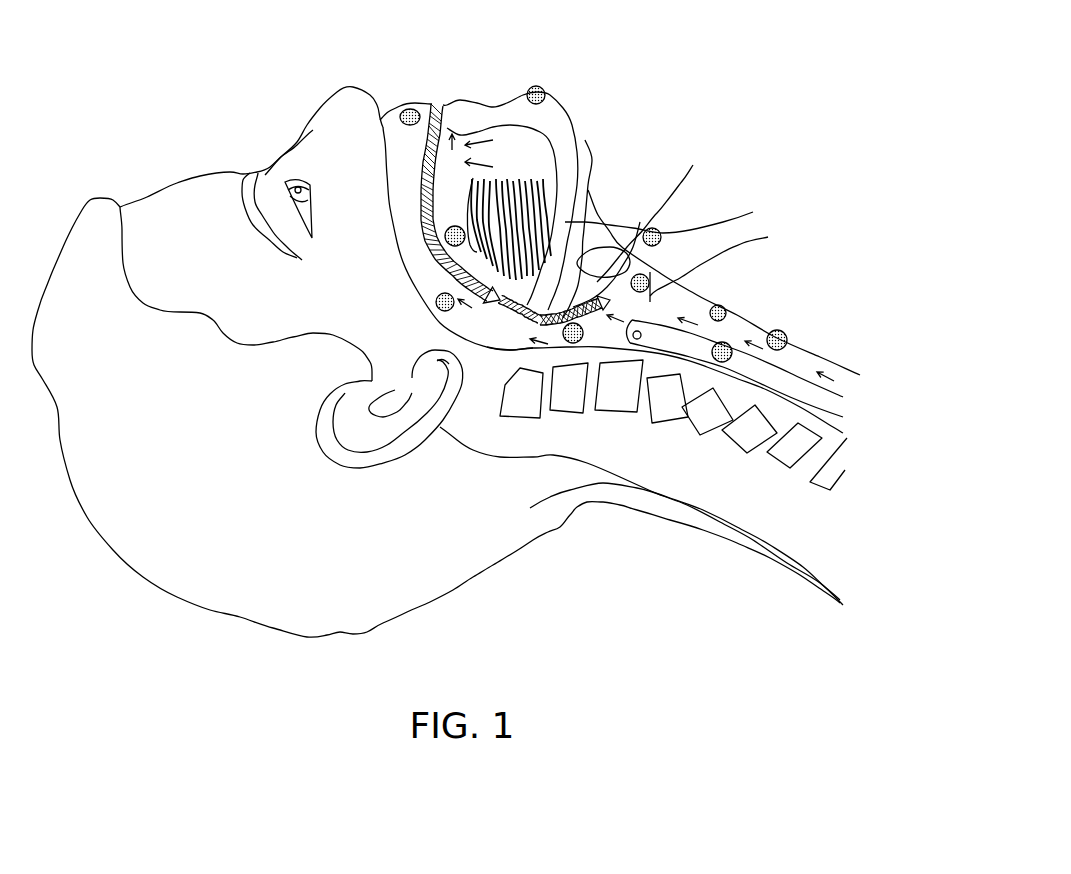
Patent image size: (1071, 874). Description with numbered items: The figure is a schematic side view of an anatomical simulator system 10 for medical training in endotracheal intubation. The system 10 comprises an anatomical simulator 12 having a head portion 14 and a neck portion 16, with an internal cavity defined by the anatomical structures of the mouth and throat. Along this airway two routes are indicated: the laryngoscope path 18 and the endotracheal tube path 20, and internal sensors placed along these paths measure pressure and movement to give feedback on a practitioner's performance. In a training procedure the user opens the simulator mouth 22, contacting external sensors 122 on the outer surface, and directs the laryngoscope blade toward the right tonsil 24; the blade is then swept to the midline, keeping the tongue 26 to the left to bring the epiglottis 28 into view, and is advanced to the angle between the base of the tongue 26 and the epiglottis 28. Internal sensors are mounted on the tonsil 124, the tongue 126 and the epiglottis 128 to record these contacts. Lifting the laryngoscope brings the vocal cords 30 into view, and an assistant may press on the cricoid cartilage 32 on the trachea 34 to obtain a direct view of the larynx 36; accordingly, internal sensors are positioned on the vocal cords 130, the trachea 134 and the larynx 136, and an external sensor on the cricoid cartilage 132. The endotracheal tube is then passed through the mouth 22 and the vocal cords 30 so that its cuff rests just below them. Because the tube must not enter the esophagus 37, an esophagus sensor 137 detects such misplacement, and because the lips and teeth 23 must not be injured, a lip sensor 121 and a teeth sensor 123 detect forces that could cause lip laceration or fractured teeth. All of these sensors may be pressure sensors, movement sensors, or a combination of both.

The anatomical simulator system 10 is at (146, 118).
The anatomical simulator 12 is at (173, 183).
The head portion 14 is at (227, 453).
The neck portion 16 is at (692, 469).
The laryngoscope path 18 is at (452, 102).
The endotracheal tube path 20 is at (540, 317).
The mouth 22 is at (462, 108).
The teeth 23 is at (550, 132).
The right tonsil 24 is at (427, 287).
The tongue 26 is at (537, 210).
The epiglottis 28 is at (553, 322).
The vocal cords 30 is at (720, 258).
The cricoid cartilage 32 is at (663, 260).
The trachea 34 is at (803, 350).
The larynx 36 is at (693, 303).
The esophagus 37 is at (770, 385).
The lip sensor 121 is at (437, 97).
The external sensors 122 is at (405, 108).
The teeth sensor 123 is at (533, 118).
The tonsil sensor 124 is at (436, 304).
The tongue sensor 126 is at (445, 235).
The epiglottis sensor 128 is at (650, 228).
The vocal cord sensor 130 is at (681, 215).
The cricoid cartilage sensor 132 is at (659, 211).
The trachea sensor 134 is at (787, 333).
The larynx sensor 136 is at (727, 312).
The esophagus sensor 137 is at (722, 363).